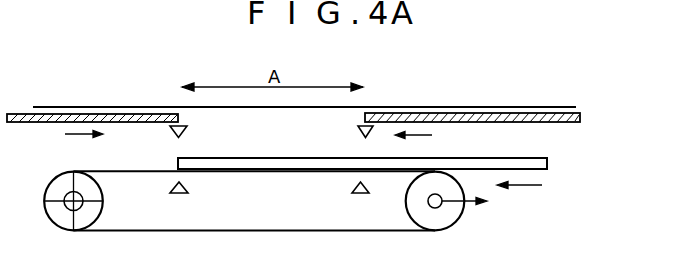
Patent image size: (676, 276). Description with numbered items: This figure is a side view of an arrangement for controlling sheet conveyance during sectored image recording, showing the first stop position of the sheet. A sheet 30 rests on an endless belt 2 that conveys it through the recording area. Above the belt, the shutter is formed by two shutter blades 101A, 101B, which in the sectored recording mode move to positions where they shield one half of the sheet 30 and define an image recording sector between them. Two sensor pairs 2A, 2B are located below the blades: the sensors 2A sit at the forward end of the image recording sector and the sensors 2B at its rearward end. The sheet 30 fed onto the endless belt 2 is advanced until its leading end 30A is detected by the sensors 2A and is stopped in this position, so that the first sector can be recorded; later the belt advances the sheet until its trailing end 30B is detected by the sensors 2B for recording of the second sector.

The shutter blade 101A is at (127, 113).
The shutter blade 101B is at (457, 113).
The endless belt 2 is at (395, 233).
The sensors 2A is at (174, 188).
The sensors 2B is at (356, 186).
The sheet 30 is at (520, 157).
The leading end 30A is at (176, 164).
The trailing end 30B is at (548, 163).